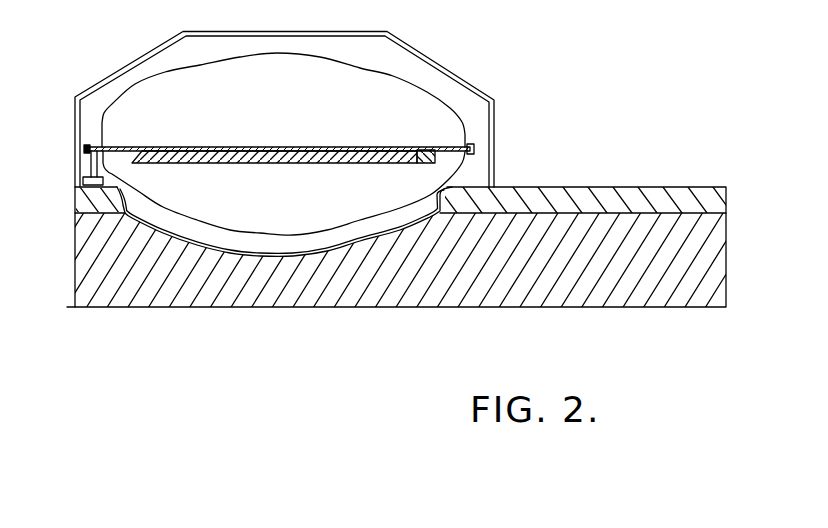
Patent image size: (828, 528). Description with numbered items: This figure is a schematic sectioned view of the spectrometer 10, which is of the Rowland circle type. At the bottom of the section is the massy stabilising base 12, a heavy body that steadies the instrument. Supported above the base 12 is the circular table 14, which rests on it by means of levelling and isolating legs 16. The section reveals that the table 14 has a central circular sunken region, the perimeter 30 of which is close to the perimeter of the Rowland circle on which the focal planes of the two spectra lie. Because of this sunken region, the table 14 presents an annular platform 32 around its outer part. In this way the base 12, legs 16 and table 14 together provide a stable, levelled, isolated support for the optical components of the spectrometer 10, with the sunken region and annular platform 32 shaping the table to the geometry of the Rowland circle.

The spectrometer 10 is at (647, 5).
The massy stabilising base 12 is at (387, 308).
The circular table 14 is at (427, 146).
The levelling and isolating legs 16 is at (104, 178).
The perimeter 30 is at (152, 147).
The annular platform 32 is at (128, 146).